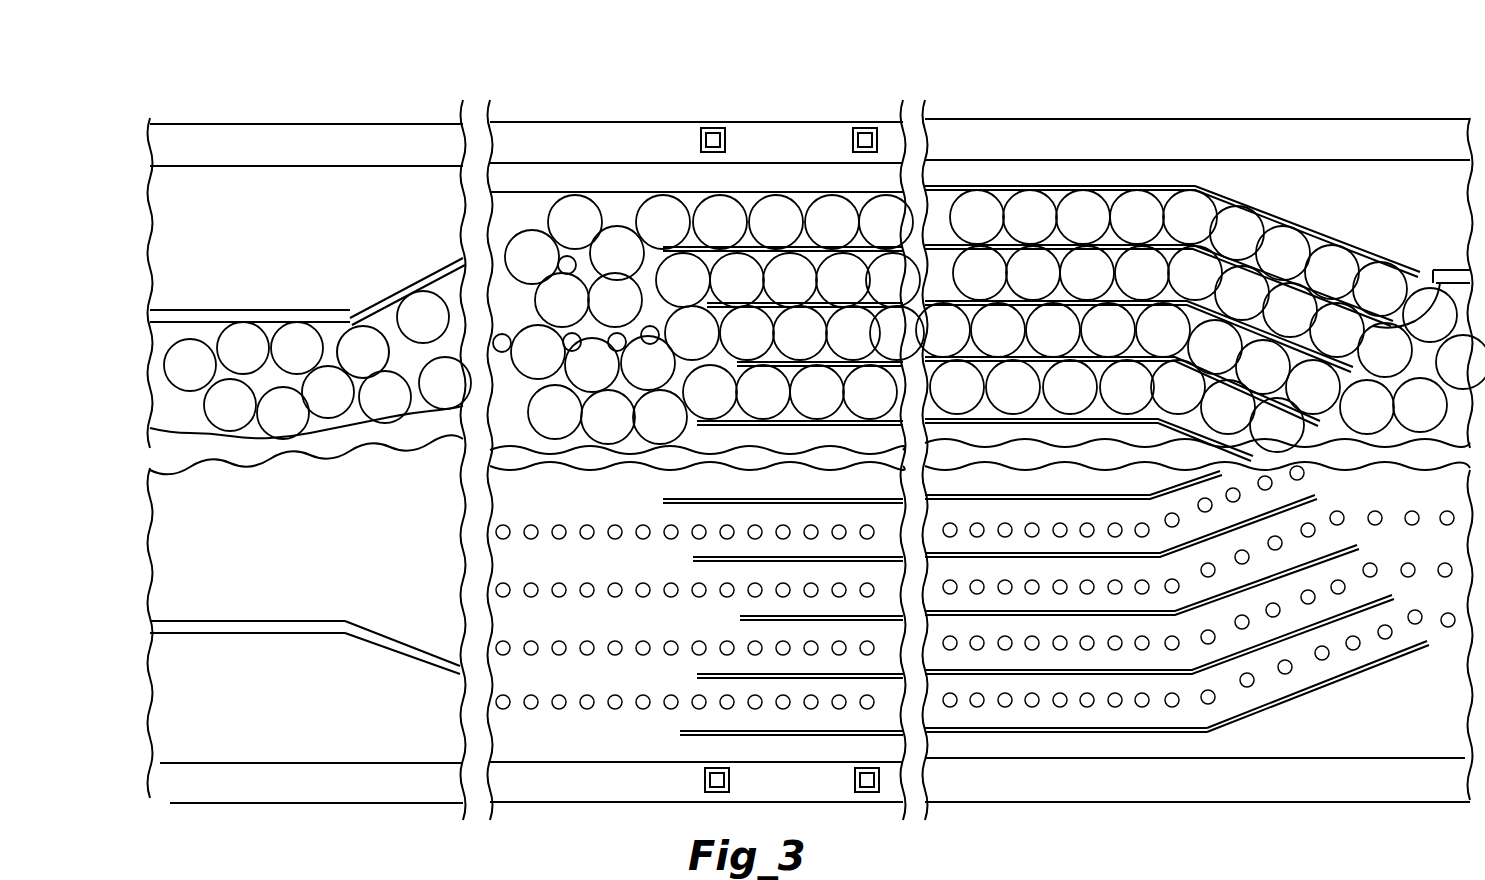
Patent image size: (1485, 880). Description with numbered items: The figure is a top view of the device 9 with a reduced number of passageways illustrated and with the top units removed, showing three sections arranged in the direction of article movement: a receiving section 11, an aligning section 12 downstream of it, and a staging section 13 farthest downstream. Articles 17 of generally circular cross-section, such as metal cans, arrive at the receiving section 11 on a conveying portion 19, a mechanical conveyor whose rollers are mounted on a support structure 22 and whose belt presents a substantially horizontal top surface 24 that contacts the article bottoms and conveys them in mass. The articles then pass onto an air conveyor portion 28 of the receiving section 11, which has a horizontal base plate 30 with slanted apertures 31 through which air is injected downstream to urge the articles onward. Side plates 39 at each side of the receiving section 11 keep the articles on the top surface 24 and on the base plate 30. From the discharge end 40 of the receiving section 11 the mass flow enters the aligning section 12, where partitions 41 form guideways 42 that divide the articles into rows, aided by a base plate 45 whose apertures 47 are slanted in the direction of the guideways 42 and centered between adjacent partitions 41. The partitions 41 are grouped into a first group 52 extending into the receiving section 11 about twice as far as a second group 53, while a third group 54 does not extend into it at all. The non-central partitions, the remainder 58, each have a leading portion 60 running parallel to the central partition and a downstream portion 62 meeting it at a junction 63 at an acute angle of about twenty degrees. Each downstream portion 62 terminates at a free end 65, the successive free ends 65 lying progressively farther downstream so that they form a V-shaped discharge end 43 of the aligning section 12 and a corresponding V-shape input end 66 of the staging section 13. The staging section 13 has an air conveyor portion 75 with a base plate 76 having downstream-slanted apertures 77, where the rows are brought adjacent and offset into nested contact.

The device 9 is at (822, 110).
The receiving section 11 is at (421, 98).
The aligning section 12 is at (1103, 92).
The staging section 13 is at (1432, 92).
The articles 17 is at (360, 337).
The conveying portion 19 is at (209, 332).
The support structure 22 is at (280, 141).
The top surface 24 is at (252, 590).
The air conveyor portion 28 is at (533, 745).
The base plate 30 is at (593, 750).
The apertures 31 is at (671, 705).
The side plates 39 is at (340, 627).
The discharge end 40 is at (618, 212).
The partitions 41 is at (1150, 730).
The guideways 42 is at (1190, 715).
The discharge end 43 is at (1390, 265).
The base plate 45 is at (1016, 719).
The apertures 47 is at (1060, 703).
The first group 52 is at (663, 502).
The second group 53 is at (703, 558).
The third group 54 is at (743, 616).
The remainder of the partitions 58 is at (963, 188).
The leading portion 60 is at (1098, 187).
The downstream portion 62 is at (1308, 220).
The junction 63 is at (1195, 187).
The free end 65 is at (1440, 270).
The V-shape input end 66 is at (1352, 493).
The air conveyor portion 75 is at (1378, 547).
The base plate 76 is at (1445, 587).
The apertures 77 is at (1353, 643).